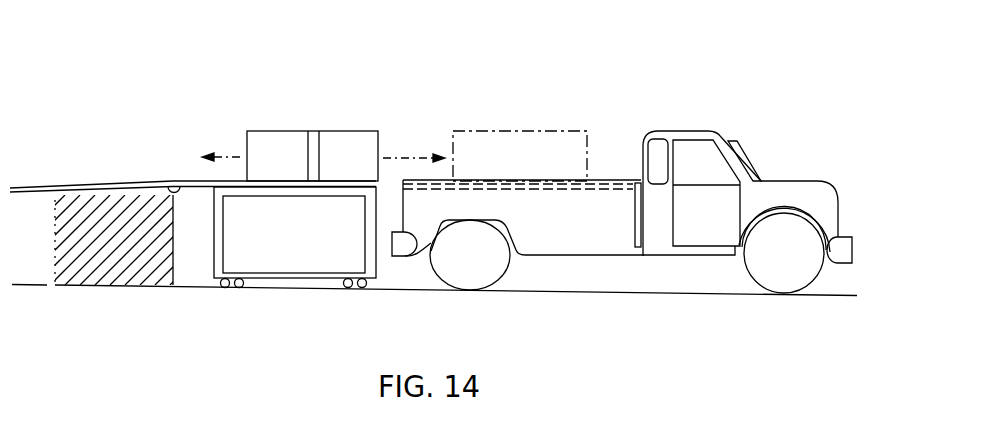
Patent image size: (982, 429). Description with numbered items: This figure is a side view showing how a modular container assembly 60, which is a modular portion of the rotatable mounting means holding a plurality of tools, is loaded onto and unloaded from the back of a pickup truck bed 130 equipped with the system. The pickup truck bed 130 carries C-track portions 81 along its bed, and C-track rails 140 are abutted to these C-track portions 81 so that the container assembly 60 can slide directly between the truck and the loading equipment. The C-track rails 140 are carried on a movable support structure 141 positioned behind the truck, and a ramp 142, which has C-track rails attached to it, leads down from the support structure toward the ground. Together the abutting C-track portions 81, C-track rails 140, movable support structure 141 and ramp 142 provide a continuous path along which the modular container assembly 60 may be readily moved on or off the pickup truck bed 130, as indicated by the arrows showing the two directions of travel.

The modular container assembly 60 is at (337, 131).
The C-track portions 81 is at (533, 190).
The pickup truck bed 130 is at (622, 239).
The C-track rails 140 is at (283, 185).
The movable support structure 141 is at (225, 232).
The ramp 142 is at (127, 182).